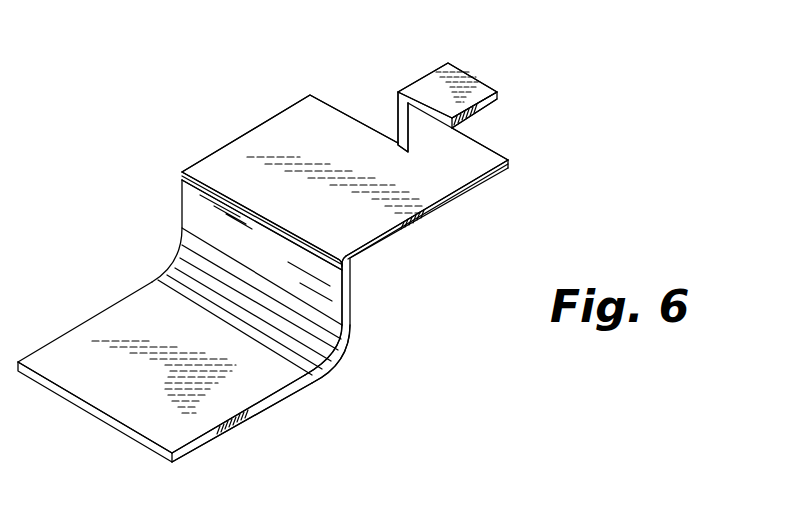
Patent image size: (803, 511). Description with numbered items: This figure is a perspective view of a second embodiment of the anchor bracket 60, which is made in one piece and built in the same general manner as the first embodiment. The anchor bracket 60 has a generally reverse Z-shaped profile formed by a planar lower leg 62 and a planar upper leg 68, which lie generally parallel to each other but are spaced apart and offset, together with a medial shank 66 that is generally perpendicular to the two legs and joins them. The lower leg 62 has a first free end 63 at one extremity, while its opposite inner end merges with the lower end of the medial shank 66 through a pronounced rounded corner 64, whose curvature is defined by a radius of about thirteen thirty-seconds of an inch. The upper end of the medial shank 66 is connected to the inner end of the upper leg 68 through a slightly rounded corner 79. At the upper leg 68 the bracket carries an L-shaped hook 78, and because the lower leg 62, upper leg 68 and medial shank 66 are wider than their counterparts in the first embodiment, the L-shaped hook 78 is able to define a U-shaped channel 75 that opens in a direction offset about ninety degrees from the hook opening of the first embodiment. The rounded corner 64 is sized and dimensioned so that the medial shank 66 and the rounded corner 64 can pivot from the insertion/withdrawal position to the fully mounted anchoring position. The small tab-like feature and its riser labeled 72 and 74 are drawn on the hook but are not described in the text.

The anchor bracket 60 is at (176, 131).
The planar lower leg 62 is at (110, 393).
The first free end 63 is at (133, 437).
The pronounced rounded corner 64 is at (345, 345).
The medial shank 66 is at (262, 256).
The upper planar leg 68 is at (313, 210).
The tab 72 is at (433, 82).
The tab riser 74 is at (420, 123).
The U-shaped channel 75 is at (470, 125).
The L-shaped hook 78 is at (482, 76).
The slightly rounded corner 79 is at (352, 263).